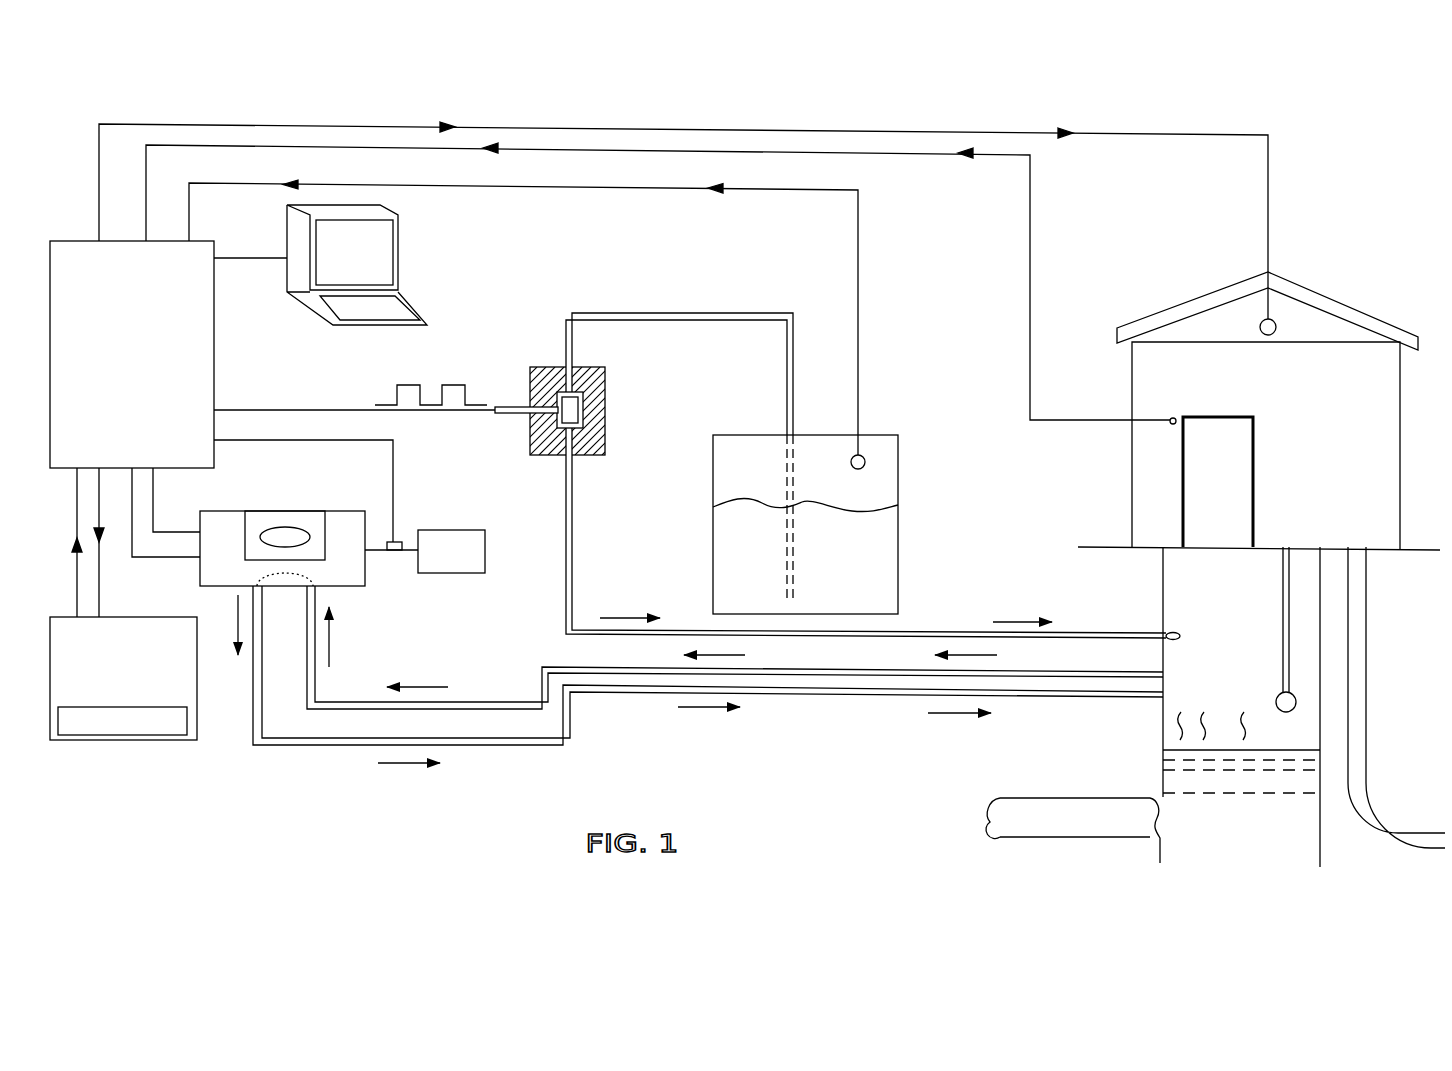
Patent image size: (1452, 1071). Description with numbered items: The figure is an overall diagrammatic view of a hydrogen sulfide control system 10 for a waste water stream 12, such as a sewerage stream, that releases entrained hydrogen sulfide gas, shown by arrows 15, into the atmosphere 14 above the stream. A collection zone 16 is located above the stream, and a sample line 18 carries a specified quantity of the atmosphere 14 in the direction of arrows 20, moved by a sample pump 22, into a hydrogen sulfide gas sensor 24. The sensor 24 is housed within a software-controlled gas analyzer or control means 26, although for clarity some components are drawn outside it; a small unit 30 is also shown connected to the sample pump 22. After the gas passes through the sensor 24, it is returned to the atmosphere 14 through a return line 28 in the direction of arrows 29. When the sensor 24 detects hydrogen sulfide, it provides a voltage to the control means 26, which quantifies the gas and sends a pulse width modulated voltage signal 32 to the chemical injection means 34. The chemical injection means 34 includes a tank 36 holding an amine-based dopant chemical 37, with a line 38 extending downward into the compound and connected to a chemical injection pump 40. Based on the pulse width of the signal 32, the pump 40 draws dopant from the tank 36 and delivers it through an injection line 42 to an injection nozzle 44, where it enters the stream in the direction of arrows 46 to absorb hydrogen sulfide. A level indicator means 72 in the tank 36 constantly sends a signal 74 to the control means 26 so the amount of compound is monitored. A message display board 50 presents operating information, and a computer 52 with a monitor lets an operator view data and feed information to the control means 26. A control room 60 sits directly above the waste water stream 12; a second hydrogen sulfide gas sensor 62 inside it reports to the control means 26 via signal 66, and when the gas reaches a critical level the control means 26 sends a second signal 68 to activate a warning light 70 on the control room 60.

The system 10 is at (1325, 130).
The waste water stream 12 is at (1282, 782).
The atmosphere 14 is at (1241, 707).
The arrows 15 is at (1177, 727).
The collection zone 16 is at (1081, 714).
The sample line 18 is at (870, 670).
The arrows 20 is at (967, 653).
The sample pump 22 is at (217, 511).
The hydrogen sulfide gas sensor 24 is at (278, 577).
The control means 26 is at (272, 429).
The return line 28 is at (317, 745).
The arrows 29 is at (717, 708).
The thermostat 30 is at (445, 573).
The voltage signal 32 is at (397, 385).
The chemical injection means 34 is at (550, 430).
The tank 36 is at (870, 538).
The dopant chemical 37 is at (805, 535).
The line 38 is at (708, 312).
The chemical injection pump 40 is at (587, 407).
The injection line 42 is at (570, 527).
The injection nozzle 44 is at (1177, 635).
The arrows 46 is at (1032, 620).
The message display board 50 is at (127, 740).
The computer 52 is at (400, 251).
The control room 60 is at (1352, 425).
The second hydrogen sulfide gas sensor 62 is at (1170, 427).
The signal 66 is at (1032, 270).
The second signal 68 is at (1158, 138).
The warning light 70 is at (1276, 323).
The level indicator means 72 is at (865, 467).
The signal 74 is at (860, 248).